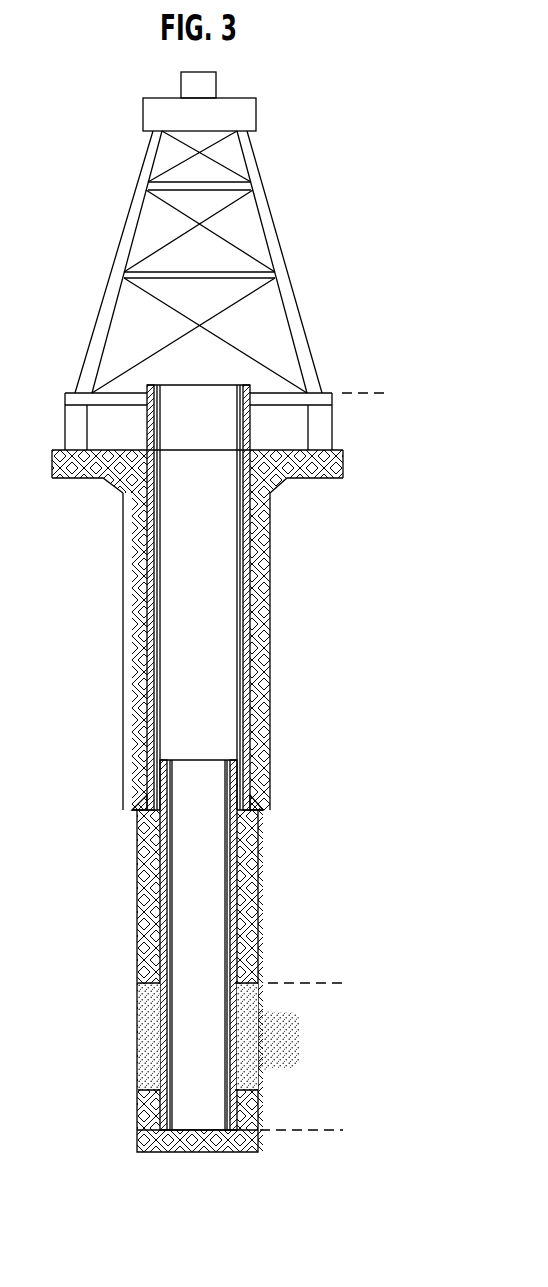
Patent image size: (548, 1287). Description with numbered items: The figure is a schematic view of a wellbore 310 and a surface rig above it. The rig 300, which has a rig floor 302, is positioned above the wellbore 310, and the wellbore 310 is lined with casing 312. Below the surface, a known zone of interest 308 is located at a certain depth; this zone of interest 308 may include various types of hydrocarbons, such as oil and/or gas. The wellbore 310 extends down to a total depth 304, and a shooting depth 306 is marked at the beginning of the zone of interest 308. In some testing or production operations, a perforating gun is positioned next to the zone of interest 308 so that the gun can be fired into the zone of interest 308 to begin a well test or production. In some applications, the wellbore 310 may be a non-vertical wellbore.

The rig 300 is at (127, 222).
The rig floor 302 is at (362, 393).
The total depth 304 is at (320, 1130).
The shooting depth 306 is at (318, 983).
The zone of interest 308 is at (285, 1048).
The wellbore 310 is at (228, 622).
The casing 312 is at (147, 548).